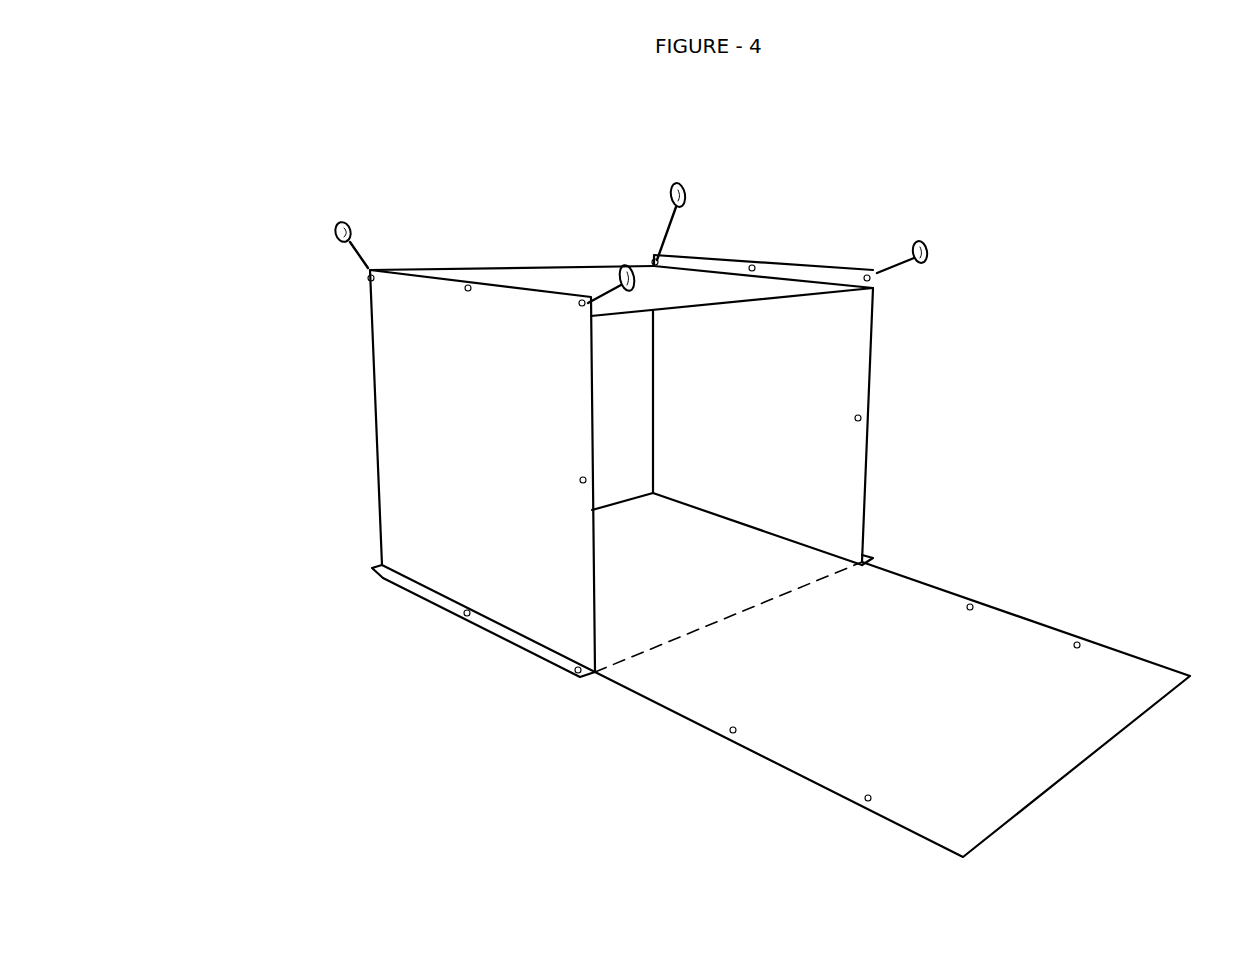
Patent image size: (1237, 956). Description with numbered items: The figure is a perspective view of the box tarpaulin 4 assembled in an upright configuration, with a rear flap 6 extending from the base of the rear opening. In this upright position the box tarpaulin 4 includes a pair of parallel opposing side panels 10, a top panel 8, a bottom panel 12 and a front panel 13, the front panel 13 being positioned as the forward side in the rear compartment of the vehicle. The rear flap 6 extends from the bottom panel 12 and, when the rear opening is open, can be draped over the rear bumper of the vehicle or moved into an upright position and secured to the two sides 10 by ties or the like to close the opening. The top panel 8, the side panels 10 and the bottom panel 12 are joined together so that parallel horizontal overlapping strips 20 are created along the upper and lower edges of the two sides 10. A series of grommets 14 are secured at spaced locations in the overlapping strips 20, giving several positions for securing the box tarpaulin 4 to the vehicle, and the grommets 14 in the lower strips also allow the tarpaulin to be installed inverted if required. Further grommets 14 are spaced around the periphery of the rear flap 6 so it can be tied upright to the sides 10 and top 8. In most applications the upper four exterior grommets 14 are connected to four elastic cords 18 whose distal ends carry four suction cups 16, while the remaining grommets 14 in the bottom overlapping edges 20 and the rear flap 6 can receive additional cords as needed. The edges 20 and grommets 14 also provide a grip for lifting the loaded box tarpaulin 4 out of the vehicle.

The box tarpaulin 4 is at (330, 458).
The rear flap 6 is at (1063, 740).
The top panel 8 is at (682, 283).
The side panel 10 is at (487, 456).
The bottom panel 12 is at (777, 560).
The front panel 13 is at (623, 427).
The grommet 14 is at (370, 278).
The suction cup 16 is at (348, 221).
The elastic cord 18 is at (360, 256).
The overlapping strip 20 is at (825, 268).